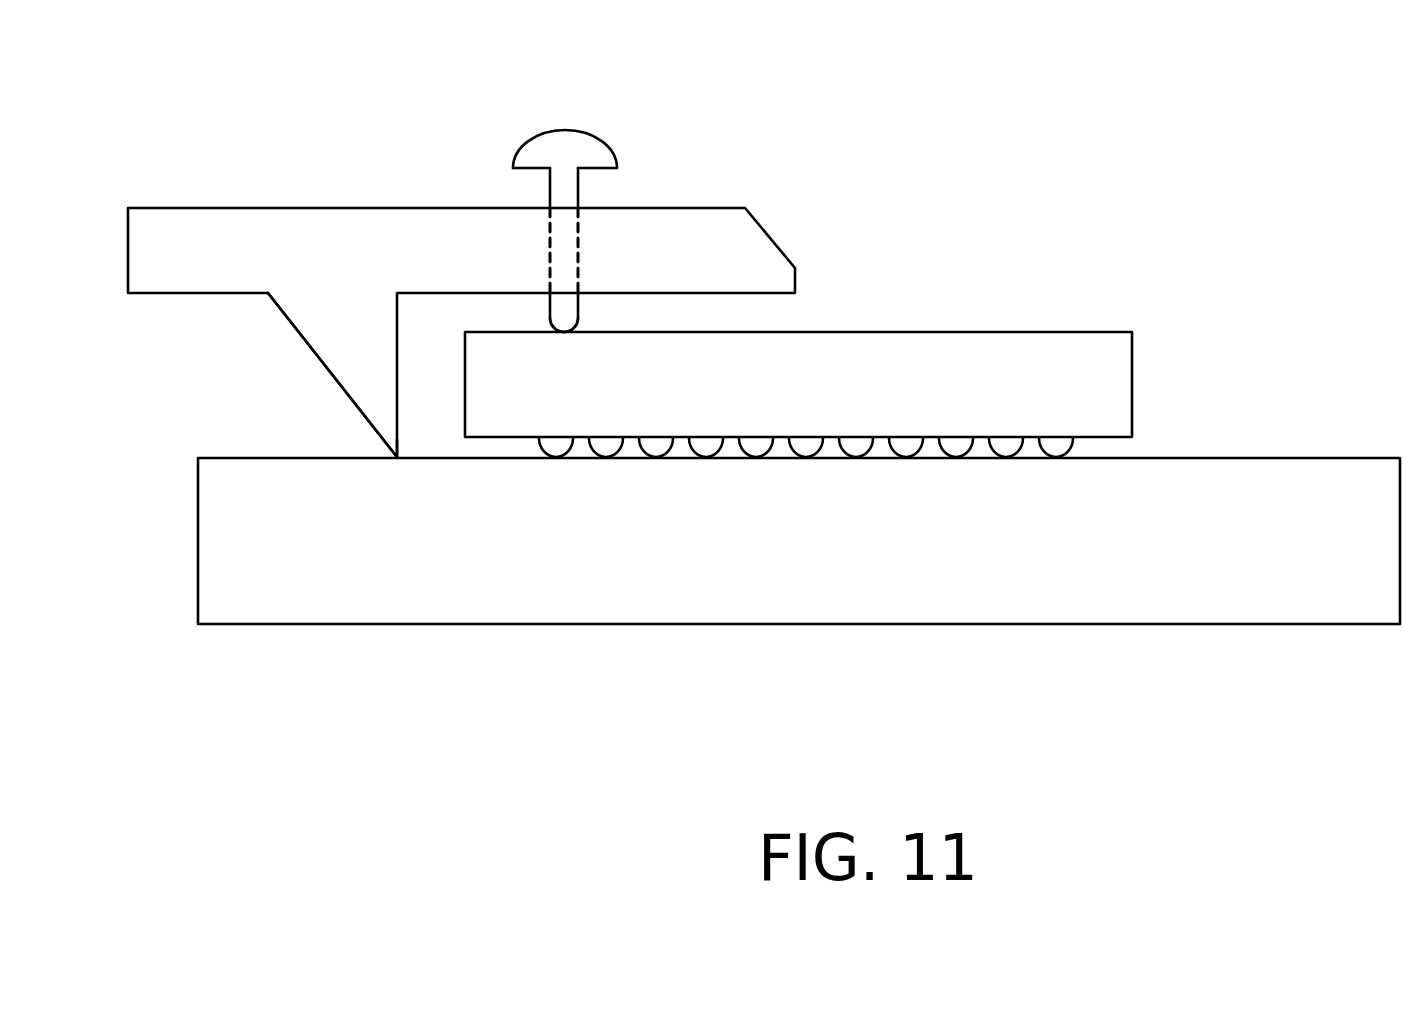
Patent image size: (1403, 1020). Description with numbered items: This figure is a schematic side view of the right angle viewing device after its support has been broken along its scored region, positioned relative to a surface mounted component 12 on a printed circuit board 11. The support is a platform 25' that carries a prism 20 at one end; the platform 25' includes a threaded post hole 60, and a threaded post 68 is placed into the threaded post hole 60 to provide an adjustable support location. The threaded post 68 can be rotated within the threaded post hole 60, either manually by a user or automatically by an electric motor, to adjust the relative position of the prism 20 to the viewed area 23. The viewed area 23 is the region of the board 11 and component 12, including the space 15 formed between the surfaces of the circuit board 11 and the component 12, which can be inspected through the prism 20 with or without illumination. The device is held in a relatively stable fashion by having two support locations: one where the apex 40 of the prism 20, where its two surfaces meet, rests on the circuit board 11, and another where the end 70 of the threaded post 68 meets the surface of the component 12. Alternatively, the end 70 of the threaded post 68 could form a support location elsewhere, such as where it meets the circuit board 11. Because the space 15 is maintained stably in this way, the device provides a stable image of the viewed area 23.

The printed circuit board 11 is at (1160, 624).
The electric component 12 is at (1132, 380).
The space 15 is at (503, 448).
The prism 20 is at (350, 338).
The viewed area 23 is at (438, 446).
The platform 25' is at (461, 266).
The apex 40 is at (397, 455).
The threaded post hole 60 is at (526, 255).
The threaded post 68 is at (565, 130).
The end of threaded post 70 is at (580, 330).